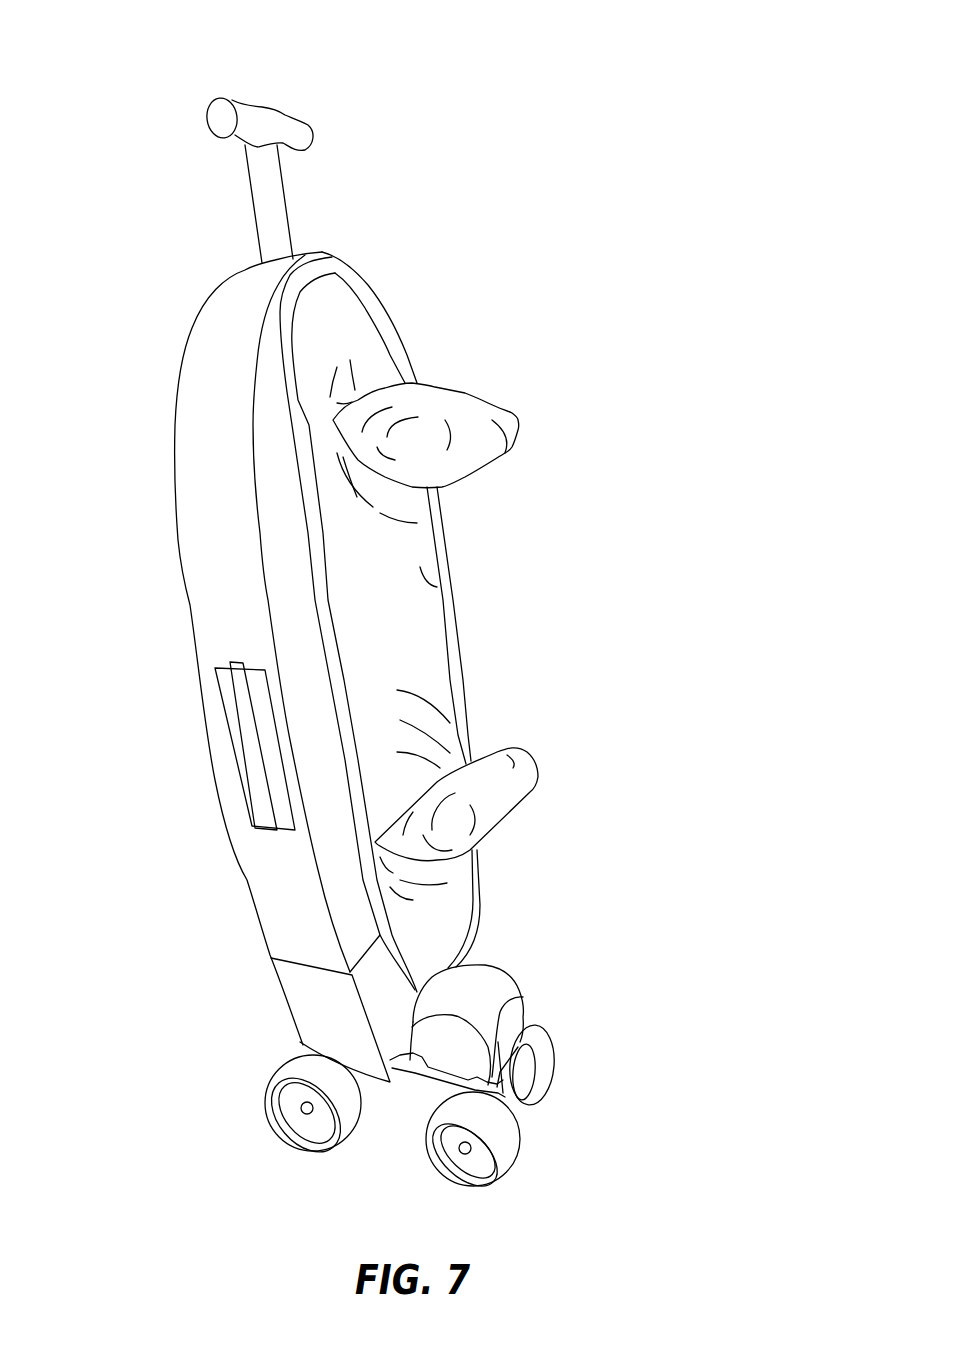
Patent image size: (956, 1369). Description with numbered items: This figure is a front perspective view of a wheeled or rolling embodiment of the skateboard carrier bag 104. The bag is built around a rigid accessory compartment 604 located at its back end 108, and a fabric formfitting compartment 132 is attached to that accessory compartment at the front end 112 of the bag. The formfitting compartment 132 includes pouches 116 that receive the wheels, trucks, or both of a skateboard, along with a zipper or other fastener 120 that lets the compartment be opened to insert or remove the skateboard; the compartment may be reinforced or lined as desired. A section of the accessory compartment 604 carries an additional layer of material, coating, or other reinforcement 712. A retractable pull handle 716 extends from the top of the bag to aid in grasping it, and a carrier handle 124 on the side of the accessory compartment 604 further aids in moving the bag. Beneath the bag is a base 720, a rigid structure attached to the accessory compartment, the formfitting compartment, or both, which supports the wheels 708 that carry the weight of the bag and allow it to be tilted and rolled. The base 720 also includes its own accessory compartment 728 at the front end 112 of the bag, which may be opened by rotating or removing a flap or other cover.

The skateboard carrier bag 104 is at (466, 255).
The back end 108 is at (166, 577).
The front end 112 is at (500, 597).
The pouches 116 is at (463, 394).
The fasteners 120 is at (343, 688).
The carrier handles 124 is at (253, 782).
The formfitting compartment 132 is at (338, 272).
The accessory compartment 604 is at (245, 265).
The wheels 708 is at (545, 1030).
The reinforcement 712 is at (303, 957).
The pull handle 716 is at (263, 102).
The base 720 is at (421, 1062).
The accessory compartment 728 is at (498, 966).